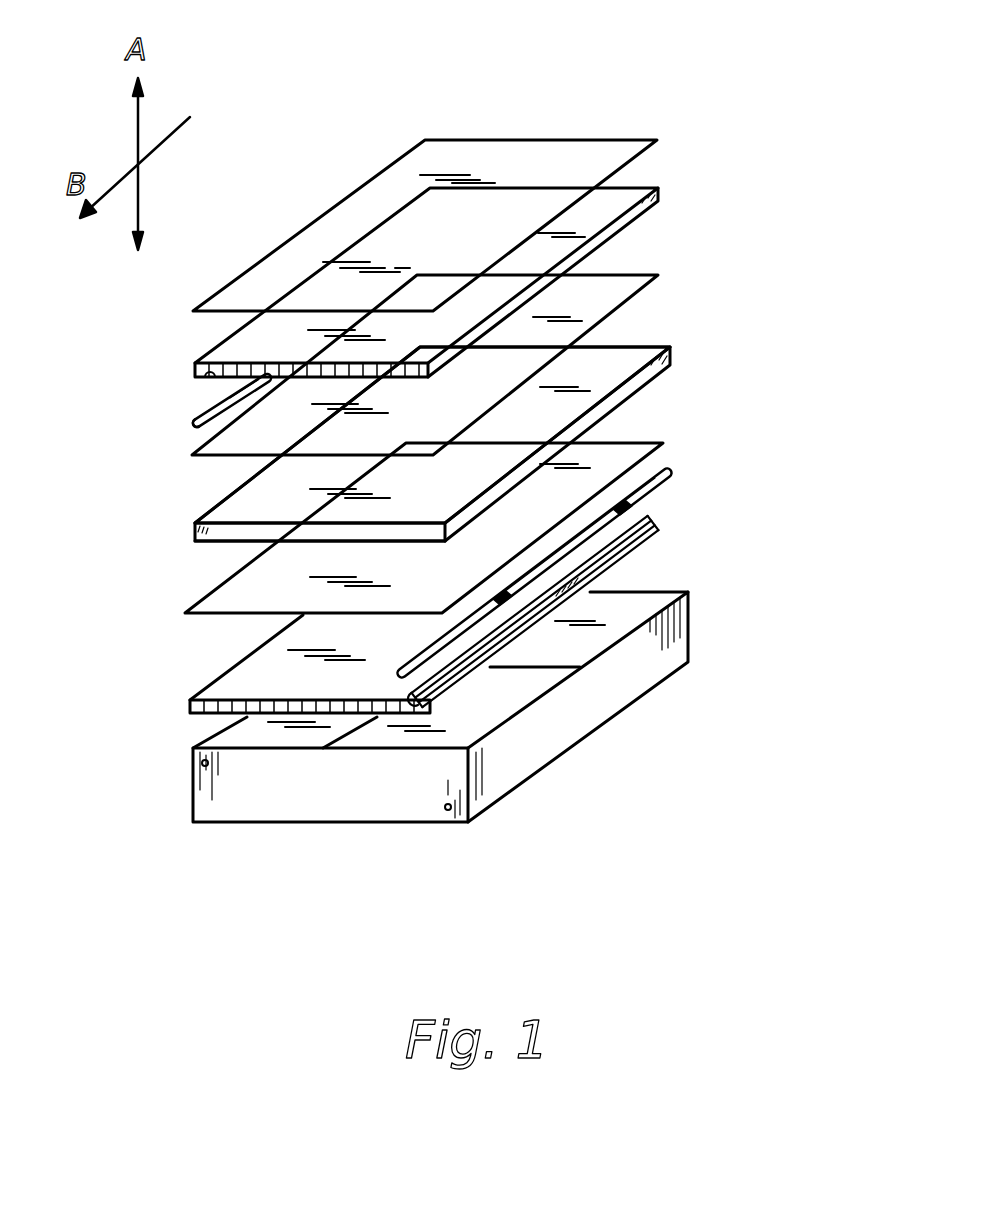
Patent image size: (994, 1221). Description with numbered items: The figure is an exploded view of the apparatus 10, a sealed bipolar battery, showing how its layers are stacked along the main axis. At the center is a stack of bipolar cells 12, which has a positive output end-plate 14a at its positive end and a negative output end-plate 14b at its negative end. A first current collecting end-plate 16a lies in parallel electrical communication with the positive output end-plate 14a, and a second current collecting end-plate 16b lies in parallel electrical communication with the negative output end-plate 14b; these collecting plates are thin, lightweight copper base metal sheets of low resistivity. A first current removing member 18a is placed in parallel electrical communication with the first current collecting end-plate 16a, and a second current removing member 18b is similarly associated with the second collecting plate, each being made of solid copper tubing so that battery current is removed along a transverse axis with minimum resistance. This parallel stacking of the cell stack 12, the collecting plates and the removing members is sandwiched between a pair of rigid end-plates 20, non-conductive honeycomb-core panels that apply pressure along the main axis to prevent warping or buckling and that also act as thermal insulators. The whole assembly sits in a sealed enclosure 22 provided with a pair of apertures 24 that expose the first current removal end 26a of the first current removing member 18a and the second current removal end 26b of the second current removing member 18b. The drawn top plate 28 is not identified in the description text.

The apparatus 10 is at (586, 810).
The stack of bipolar cells 12 is at (193, 532).
The positive output end-plate 14a is at (632, 355).
The negative output end-plate 14b is at (223, 547).
The first current collecting end-plate 16a is at (620, 287).
The second current collecting end-plate 16b is at (627, 452).
The first current removing member 18a is at (213, 403).
The second current removing member 18b is at (663, 483).
The rigid end-plate 20 is at (627, 197).
The sealed enclosure 22 is at (590, 733).
The apertures 24 is at (205, 766).
The first current removal end 26a is at (196, 428).
The second current removal end 26b is at (433, 697).
The top plate 28 is at (492, 157).